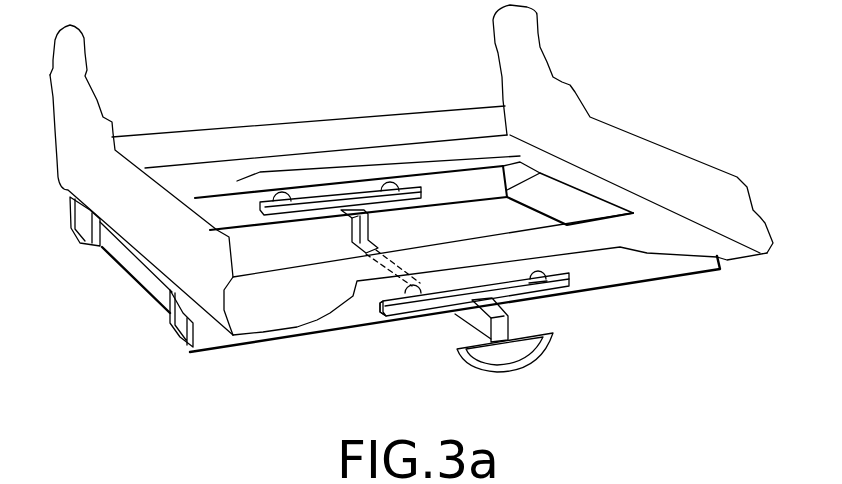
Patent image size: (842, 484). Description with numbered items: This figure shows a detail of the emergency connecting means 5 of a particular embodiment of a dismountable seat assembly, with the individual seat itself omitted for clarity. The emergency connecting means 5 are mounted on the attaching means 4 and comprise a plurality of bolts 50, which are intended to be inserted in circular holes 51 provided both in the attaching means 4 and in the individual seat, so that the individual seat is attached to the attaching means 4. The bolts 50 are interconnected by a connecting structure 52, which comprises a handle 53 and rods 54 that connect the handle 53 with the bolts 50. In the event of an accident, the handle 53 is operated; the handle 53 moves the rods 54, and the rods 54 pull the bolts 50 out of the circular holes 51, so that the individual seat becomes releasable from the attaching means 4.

The attaching means 4 is at (313, 323).
The emergency connecting means 5 is at (353, 178).
The bolts 50 is at (543, 278).
The circular holes 51 is at (533, 270).
The connecting structure 52 is at (472, 320).
The handle 53 is at (515, 365).
The rods 54 is at (385, 316).